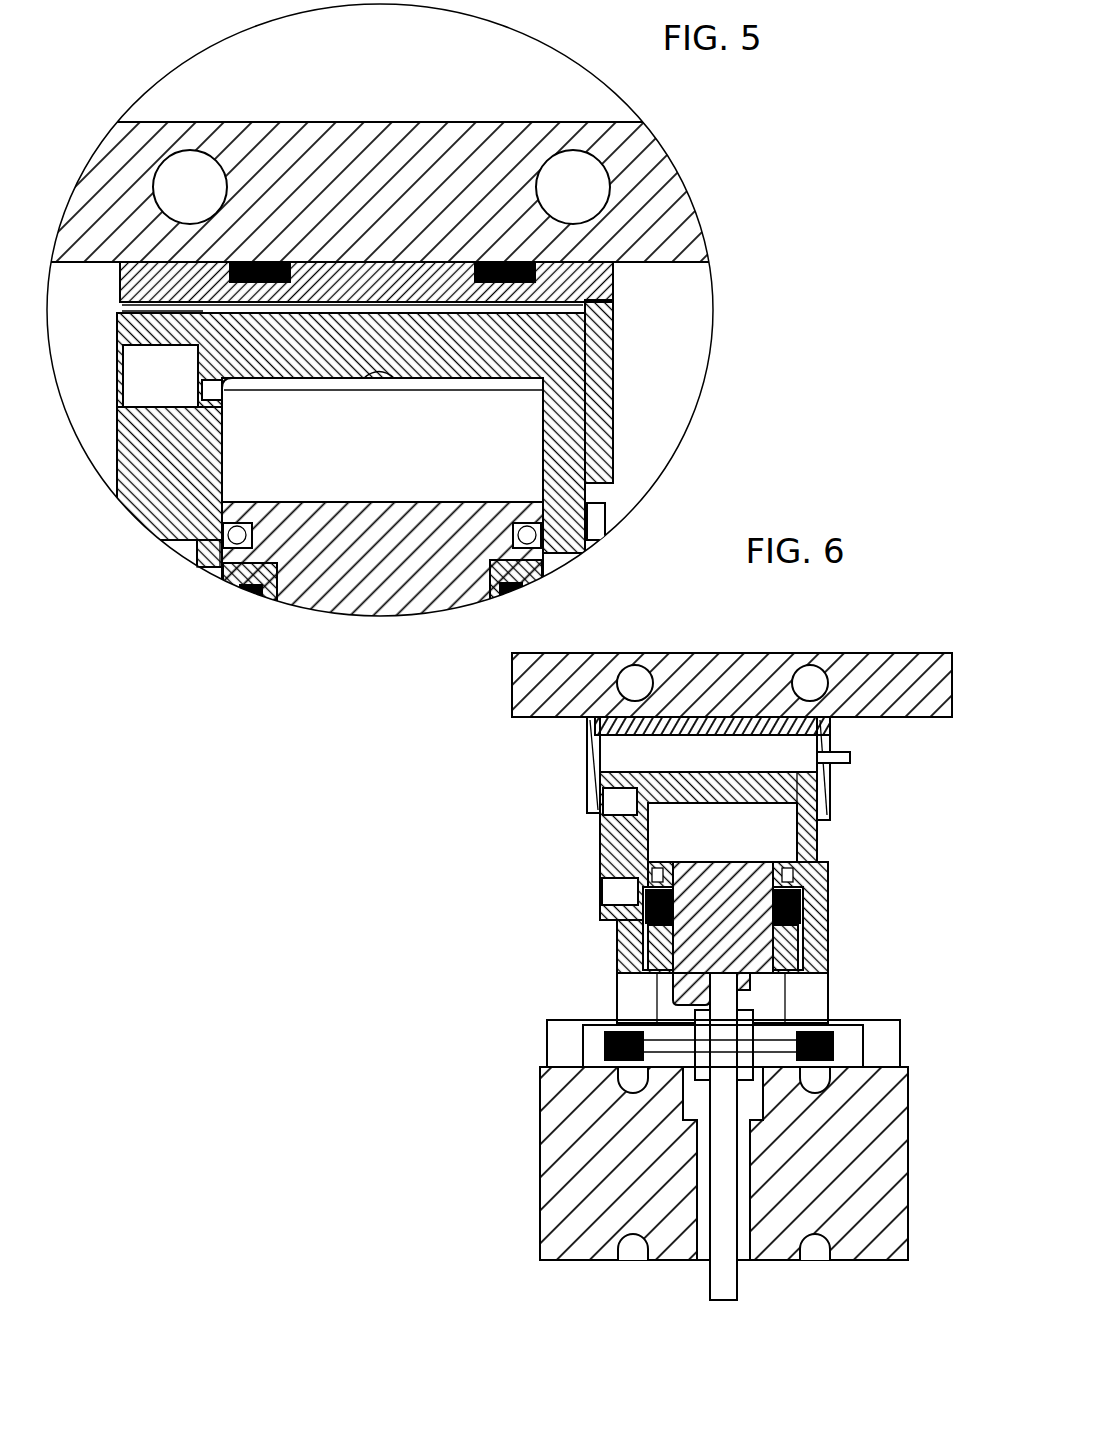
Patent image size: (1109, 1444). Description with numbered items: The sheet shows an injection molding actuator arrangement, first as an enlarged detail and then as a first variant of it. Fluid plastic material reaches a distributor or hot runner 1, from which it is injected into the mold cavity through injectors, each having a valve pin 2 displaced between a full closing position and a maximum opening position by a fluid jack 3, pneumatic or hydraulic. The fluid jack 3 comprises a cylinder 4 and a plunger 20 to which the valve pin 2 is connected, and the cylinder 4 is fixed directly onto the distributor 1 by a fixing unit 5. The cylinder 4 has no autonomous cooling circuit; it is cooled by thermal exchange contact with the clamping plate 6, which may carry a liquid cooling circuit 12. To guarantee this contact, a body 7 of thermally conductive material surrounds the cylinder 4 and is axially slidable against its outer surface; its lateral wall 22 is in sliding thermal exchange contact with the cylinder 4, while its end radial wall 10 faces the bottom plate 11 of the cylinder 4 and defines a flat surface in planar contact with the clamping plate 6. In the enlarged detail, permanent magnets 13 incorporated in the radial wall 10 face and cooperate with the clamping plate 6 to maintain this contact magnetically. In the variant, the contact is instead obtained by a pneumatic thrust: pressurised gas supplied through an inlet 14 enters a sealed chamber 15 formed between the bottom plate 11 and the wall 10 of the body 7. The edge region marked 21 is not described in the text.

In FIG. 5, the distributor or hot runner 1 is at (193, 170).
In FIG. 6, the distributor or hot runner 1 is at (710, 798).
In FIG. 5, the valve pin 2 is at (385, 130).
In FIG. 6, the valve pin 2 is at (722, 1290).
In FIG. 5, the fluid jack 3 is at (204, 582).
In FIG. 6, the fluid jack 3 is at (663, 1003).
In FIG. 5, the cylinder 4 is at (122, 452).
In FIG. 6, the cylinder 4 is at (598, 848).
In FIG. 6, the fixing unit 5 is at (612, 1046).
In FIG. 5, the clamping plate 6 is at (398, 121).
In FIG. 6, the clamping plate 6 is at (873, 651).
In FIG. 6, the body made of thermally conductive material 7 is at (585, 780).
In FIG. 5, the end radial wall 10 is at (388, 262).
In FIG. 6, the end radial wall 10 is at (722, 717).
In FIG. 5, the bottom plate 11 is at (346, 371).
In FIG. 6, the liquid cooling circuit 12 is at (630, 683).
In FIG. 5, the permanent magnets 13 is at (240, 282).
In FIG. 6, the inlet 14 is at (851, 757).
In FIG. 5, the sealed chamber 15 is at (380, 312).
In FIG. 6, the sealed chamber 15 is at (790, 760).
In FIG. 5, the plunger 20 is at (375, 508).
In FIG. 6, the plunger 20 is at (700, 928).
In FIG. 5, the outer edge 21 is at (628, 263).
In FIG. 6, the outer edge 21 is at (552, 718).
In FIG. 5, the lateral wall 22 is at (618, 358).
In FIG. 6, the lateral wall 22 is at (586, 740).